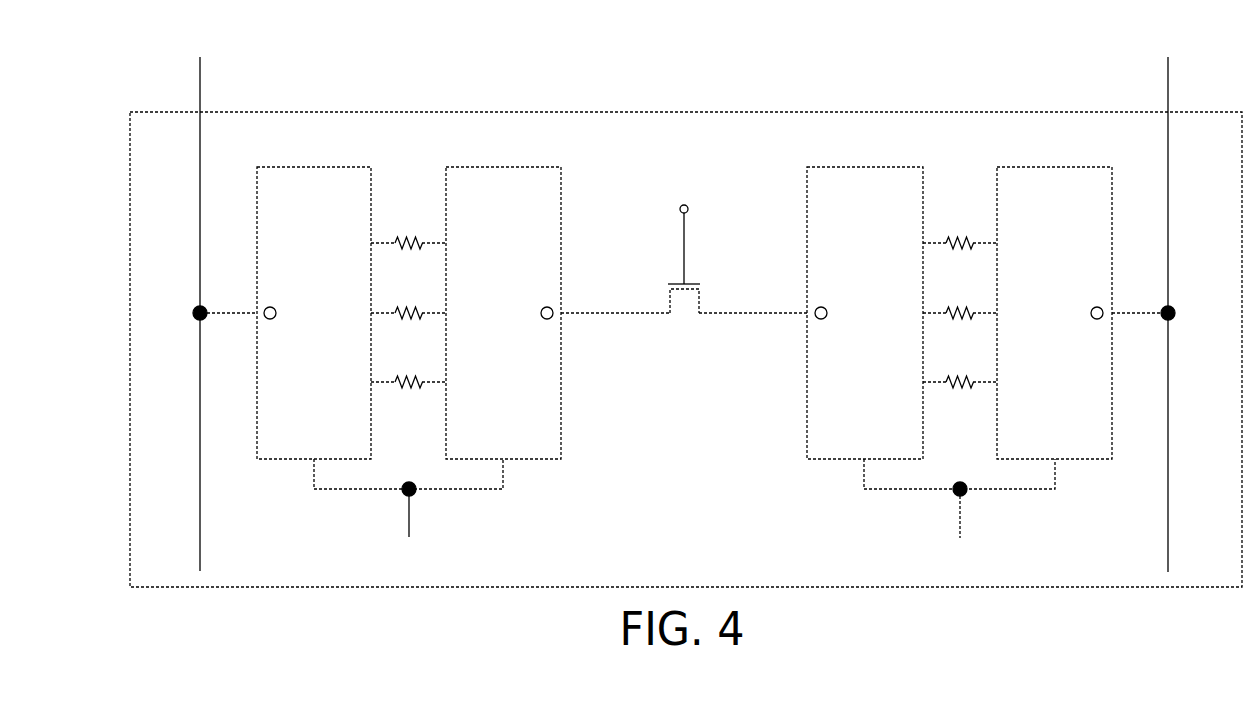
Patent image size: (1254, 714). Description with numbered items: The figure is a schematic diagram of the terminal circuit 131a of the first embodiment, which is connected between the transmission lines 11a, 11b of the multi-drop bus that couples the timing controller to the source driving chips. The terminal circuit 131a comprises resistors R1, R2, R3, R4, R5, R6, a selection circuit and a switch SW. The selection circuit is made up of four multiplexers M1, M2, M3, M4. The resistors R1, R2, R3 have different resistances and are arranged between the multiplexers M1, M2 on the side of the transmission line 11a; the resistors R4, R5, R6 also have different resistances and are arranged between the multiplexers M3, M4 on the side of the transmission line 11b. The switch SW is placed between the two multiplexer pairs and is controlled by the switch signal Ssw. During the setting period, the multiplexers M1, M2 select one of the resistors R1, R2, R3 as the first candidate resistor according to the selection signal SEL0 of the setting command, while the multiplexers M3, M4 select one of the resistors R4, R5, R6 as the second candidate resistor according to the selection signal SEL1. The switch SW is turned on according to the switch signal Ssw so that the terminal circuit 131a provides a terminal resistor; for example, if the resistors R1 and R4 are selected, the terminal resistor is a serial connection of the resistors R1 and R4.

The transmission line 11a is at (200, 80).
The transmission line 11b is at (1168, 80).
The terminal circuit 131a is at (130, 288).
The multiplexer M1 is at (314, 167).
The multiplexer M2 is at (503, 167).
The multiplexer M3 is at (865, 167).
The multiplexer M4 is at (1055, 167).
The resistor R1 is at (408, 230).
The resistor R2 is at (408, 300).
The resistor R3 is at (408, 369).
The resistor R4 is at (960, 230).
The resistor R5 is at (960, 300).
The resistor R6 is at (960, 369).
The switch SW is at (684, 313).
The switch signal Ssw is at (684, 233).
The selection signal SEL0 is at (408, 514).
The selection signal SEL1 is at (959, 514).